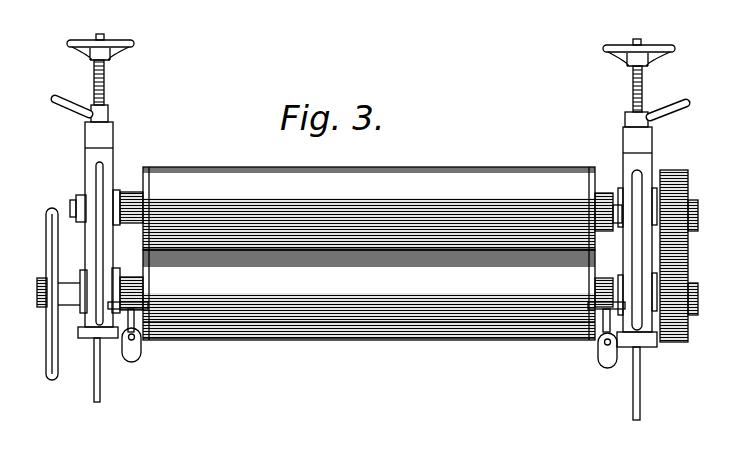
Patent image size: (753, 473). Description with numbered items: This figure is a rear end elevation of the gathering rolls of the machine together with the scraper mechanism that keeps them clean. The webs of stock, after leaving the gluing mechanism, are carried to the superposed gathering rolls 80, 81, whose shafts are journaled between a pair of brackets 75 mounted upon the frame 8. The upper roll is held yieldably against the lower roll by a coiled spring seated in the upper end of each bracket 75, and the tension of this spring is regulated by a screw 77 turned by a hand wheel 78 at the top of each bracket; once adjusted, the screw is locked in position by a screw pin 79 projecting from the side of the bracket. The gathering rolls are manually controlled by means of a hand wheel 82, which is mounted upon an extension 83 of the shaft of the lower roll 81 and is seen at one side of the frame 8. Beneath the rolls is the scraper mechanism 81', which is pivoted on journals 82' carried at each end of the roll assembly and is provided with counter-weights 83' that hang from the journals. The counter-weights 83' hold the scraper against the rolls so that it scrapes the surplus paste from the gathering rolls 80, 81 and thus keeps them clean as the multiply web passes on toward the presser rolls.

The frame 8 is at (101, 398).
The brackets 75 is at (92, 158).
The screw 77 is at (105, 88).
The hand wheel 78 is at (86, 50).
The screw pin 79 is at (60, 108).
The gathering roll 80 is at (346, 208).
The gathering roll 81 is at (346, 293).
The scraper mechanism 81' is at (369, 345).
The hand wheel 82 is at (50, 311).
The journals 82' is at (366, 340).
The extension 83 is at (349, 256).
The counter-weights 83' is at (369, 362).